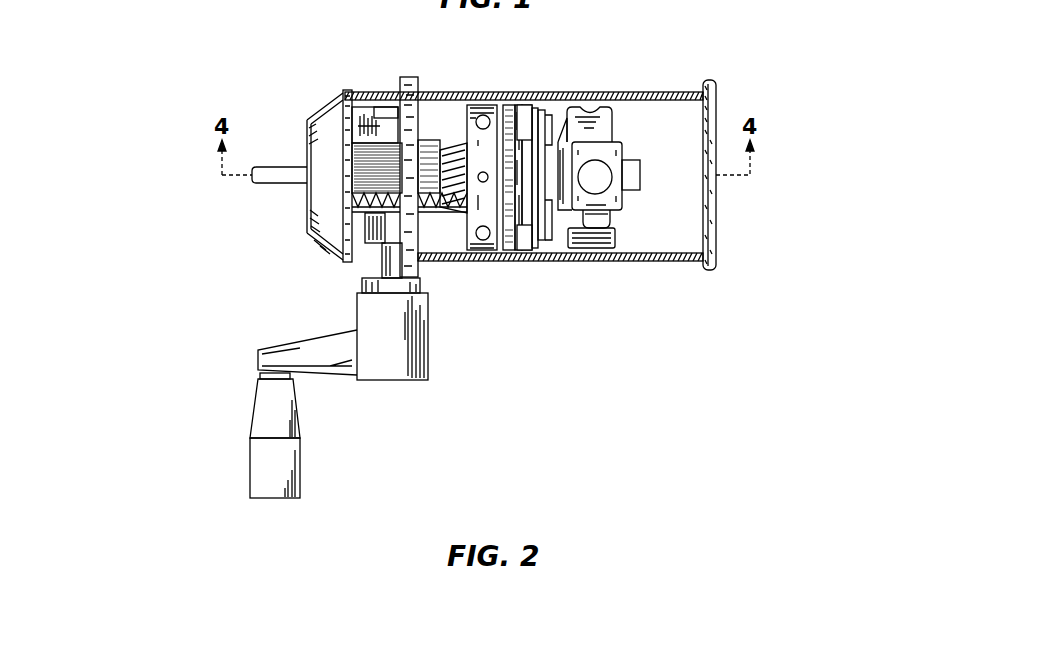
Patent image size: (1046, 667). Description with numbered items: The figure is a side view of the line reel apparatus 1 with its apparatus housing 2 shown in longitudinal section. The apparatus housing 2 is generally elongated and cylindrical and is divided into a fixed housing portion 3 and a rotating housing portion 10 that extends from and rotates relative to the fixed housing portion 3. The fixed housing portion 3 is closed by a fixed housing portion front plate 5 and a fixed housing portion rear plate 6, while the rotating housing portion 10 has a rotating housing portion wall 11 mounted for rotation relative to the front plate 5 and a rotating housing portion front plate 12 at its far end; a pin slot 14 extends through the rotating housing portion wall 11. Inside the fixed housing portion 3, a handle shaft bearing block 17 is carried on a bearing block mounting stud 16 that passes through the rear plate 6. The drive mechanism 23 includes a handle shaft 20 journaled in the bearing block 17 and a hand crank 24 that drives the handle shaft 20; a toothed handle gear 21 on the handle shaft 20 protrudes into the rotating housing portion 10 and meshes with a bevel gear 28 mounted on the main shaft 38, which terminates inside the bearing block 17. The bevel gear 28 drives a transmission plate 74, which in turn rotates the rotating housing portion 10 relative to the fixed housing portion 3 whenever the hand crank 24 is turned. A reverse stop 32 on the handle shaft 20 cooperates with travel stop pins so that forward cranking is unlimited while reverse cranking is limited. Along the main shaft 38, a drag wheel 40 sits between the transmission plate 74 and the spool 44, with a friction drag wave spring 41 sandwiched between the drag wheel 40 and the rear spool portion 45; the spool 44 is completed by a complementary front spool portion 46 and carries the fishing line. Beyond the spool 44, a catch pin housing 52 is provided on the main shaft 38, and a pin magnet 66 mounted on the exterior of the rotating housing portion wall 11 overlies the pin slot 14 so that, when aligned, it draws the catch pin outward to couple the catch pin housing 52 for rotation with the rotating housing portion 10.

The line reel apparatus 1 is at (250, 0).
The apparatus housing 2 is at (322, 246).
The fixed housing portion 3 is at (369, 90).
The fixed housing portion front plate 5 is at (392, 115).
The fixed housing portion rear plate 6 is at (322, 106).
The rotating housing portion 10 is at (637, 93).
The rotating housing portion wall 11 is at (620, 91).
The rotating housing portion front plate 12 is at (718, 100).
The pin slot 14 is at (592, 92).
The bearing block mounting stud 16 is at (285, 180).
The handle shaft bearing block 17 is at (380, 157).
The handle shaft 20 is at (393, 268).
The handle gear 21 is at (365, 213).
The drive mechanism 23 is at (250, 465).
The hand crank 24 is at (277, 465).
The bevel gear 28 is at (462, 142).
The reverse stop 32 is at (352, 100).
The main shaft 38 is at (640, 188).
The drag wheel 40 is at (508, 258).
The friction drag wave spring 41 is at (503, 135).
The spool 44 is at (538, 255).
The rear spool portion 45 is at (532, 258).
The front spool portion 46 is at (556, 225).
The catch pin housing 52 is at (614, 232).
The pin magnet 66 is at (620, 206).
The transmission plate 74 is at (500, 105).